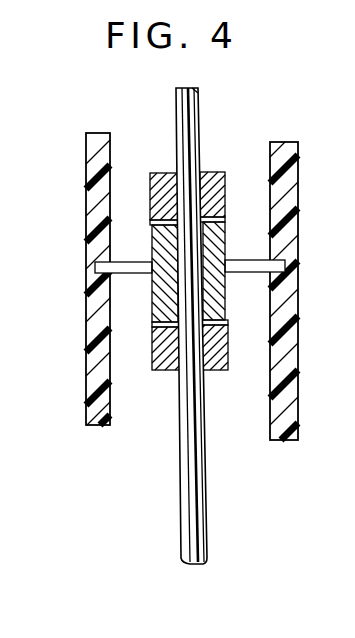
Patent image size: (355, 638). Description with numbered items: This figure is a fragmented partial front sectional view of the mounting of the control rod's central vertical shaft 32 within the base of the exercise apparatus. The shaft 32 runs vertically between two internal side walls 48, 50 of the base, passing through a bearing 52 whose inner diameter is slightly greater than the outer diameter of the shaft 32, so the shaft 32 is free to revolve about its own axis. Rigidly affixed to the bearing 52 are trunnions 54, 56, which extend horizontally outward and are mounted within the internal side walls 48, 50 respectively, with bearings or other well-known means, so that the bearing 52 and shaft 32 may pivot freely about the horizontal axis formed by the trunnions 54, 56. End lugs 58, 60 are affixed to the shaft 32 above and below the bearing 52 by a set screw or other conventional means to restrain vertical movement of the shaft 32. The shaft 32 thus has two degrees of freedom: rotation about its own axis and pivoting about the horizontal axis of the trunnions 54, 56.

The central vertical shaft 32 is at (187, 485).
The internal side wall 48 is at (93, 250).
The internal side wall 50 is at (292, 228).
The bearing 52 is at (158, 297).
The trunnion 54 is at (130, 262).
The trunnion 56 is at (247, 265).
The end lug 58 is at (214, 171).
The end lug 60 is at (171, 362).